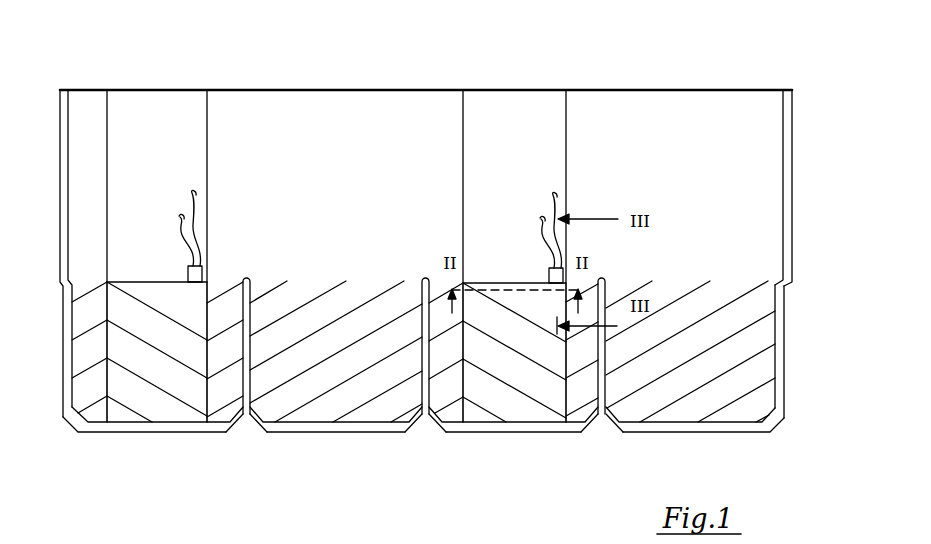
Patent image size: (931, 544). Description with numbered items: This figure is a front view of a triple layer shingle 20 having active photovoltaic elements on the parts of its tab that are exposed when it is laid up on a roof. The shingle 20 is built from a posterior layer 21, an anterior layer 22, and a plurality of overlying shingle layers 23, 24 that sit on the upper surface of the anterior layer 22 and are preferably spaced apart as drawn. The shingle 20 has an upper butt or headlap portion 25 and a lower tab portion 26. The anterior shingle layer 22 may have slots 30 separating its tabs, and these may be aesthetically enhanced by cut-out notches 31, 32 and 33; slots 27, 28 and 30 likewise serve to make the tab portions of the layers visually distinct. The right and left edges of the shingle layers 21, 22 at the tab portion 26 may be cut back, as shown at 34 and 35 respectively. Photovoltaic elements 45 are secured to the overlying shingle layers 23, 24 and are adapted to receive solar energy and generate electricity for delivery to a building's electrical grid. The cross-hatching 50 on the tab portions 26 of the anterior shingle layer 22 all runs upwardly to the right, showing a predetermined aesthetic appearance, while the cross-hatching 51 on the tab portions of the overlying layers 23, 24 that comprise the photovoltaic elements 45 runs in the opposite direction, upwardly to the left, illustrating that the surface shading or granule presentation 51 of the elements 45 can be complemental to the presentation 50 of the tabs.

The shingle 20 is at (436, 258).
The posterior layer 21 is at (787, 407).
The anterior layer 22 is at (776, 170).
The overlying shingle layer 23 is at (503, 108).
The overlying shingle layer 24 is at (152, 105).
The headlap portion 25 is at (692, 119).
The tab portion 26 is at (716, 396).
The slot 27 is at (603, 424).
The slot 28 is at (425, 414).
The slot 30 is at (248, 414).
The cut-out notch 31 is at (607, 428).
The cut-out notch 32 is at (421, 405).
The cut-out notch 33 is at (240, 430).
The right edge cut-back 34 is at (786, 354).
The left edge cut-back 35 is at (62, 324).
The photovoltaic element 45 is at (128, 400).
The cross-hatching 50 is at (88, 367).
The cross-hatching 51 is at (177, 363).